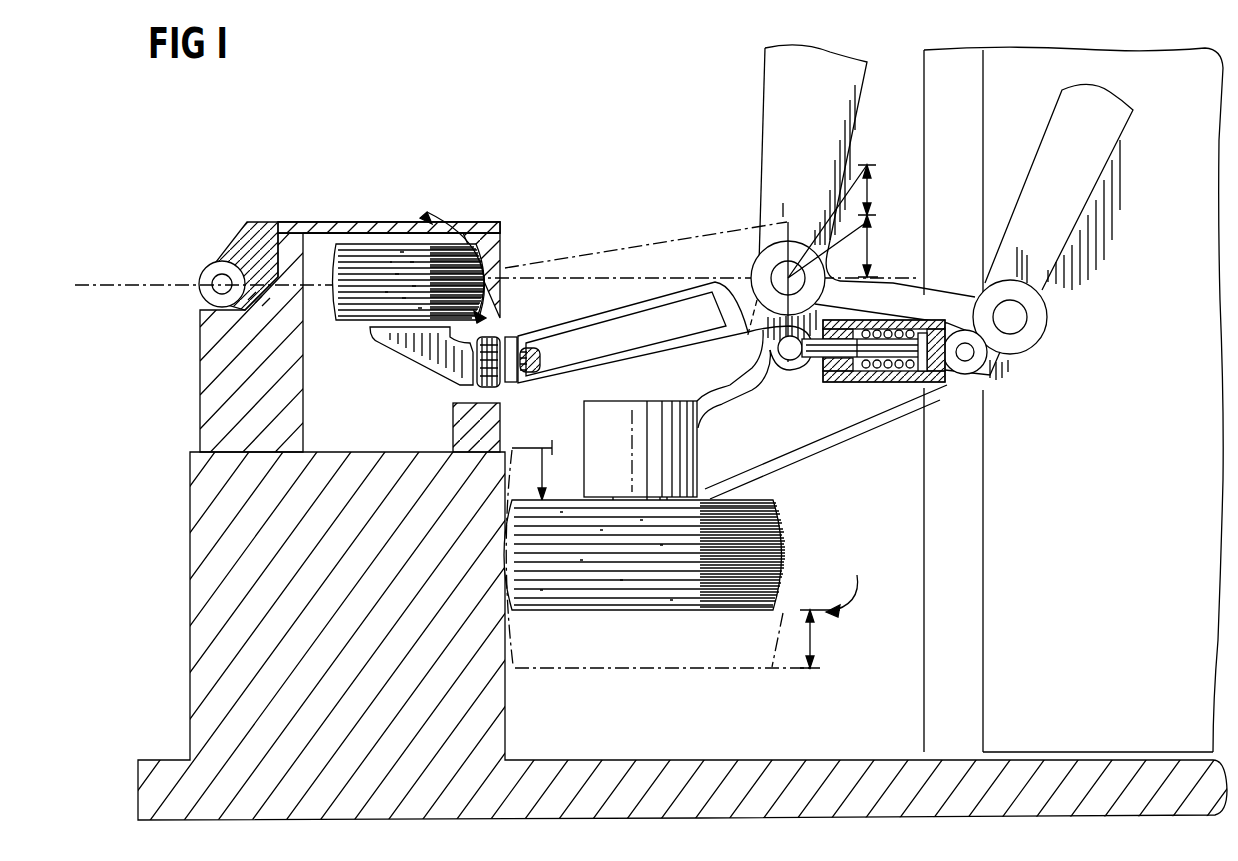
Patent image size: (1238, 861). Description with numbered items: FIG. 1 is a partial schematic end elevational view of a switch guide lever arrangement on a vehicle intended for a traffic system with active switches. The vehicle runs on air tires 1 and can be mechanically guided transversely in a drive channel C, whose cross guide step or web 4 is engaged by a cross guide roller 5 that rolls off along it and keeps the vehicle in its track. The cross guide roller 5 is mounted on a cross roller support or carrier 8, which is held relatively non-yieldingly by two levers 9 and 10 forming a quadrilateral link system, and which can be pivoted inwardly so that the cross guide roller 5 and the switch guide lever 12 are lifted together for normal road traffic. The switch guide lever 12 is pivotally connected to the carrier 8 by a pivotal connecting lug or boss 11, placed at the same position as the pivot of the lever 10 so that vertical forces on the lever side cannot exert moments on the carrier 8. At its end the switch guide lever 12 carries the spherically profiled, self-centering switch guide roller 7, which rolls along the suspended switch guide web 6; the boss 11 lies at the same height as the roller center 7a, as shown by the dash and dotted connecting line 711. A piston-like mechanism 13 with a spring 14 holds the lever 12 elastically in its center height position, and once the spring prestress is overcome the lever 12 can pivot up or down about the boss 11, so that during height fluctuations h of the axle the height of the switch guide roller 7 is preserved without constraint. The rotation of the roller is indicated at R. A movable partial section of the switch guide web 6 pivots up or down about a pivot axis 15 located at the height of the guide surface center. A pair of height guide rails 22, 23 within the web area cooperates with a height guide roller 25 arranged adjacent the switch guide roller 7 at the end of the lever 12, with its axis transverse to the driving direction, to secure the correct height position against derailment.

The air tires 1 is at (996, 665).
The cross guide web 4 is at (505, 660).
The cross guide roller 5 is at (702, 610).
The switch guide web 6 is at (478, 220).
The switch guide roller 7 is at (346, 268).
The center of the switch guide roller 7a is at (412, 215).
The cross roller support or carrier 8 is at (800, 427).
The lever 9 is at (1060, 252).
The lever 10 is at (790, 123).
The pivotal connecting boss or lug 11 is at (755, 262).
The switch guide lever 12 is at (618, 332).
The piston-like mechanism 13 is at (927, 382).
The spring 14 is at (886, 378).
The pivot axis 15 is at (210, 272).
The height guide rail 22 is at (462, 345).
The height guide rail 23 is at (456, 432).
The height guide roller 25 is at (503, 388).
The dash and dotted connecting line 711 is at (151, 287).
The direction of rotation R is at (421, 247).
The drive channel C is at (844, 579).
The height fluctuation h is at (697, 416).